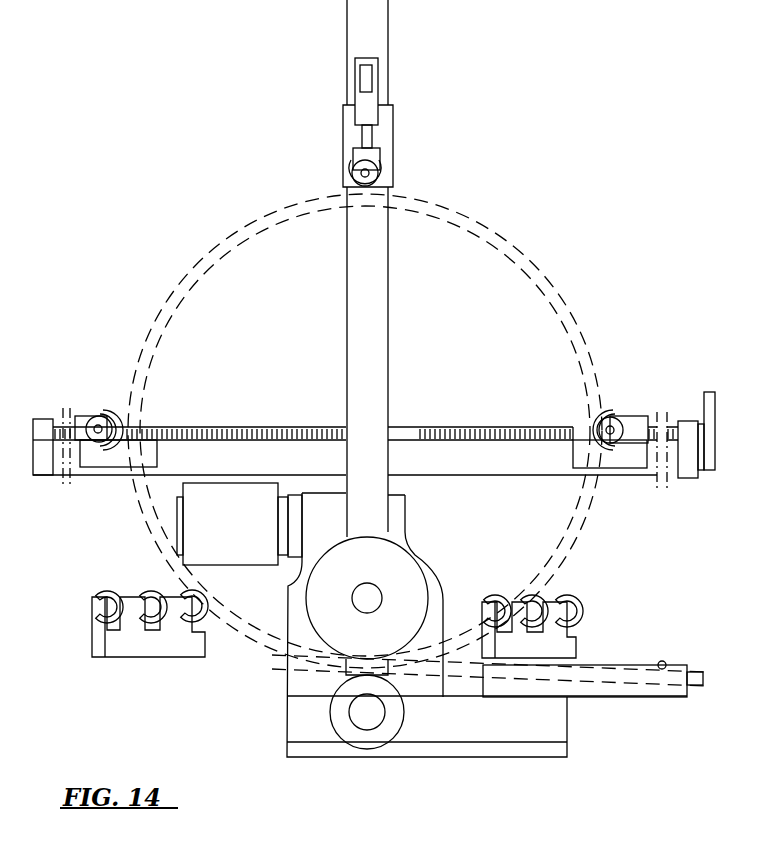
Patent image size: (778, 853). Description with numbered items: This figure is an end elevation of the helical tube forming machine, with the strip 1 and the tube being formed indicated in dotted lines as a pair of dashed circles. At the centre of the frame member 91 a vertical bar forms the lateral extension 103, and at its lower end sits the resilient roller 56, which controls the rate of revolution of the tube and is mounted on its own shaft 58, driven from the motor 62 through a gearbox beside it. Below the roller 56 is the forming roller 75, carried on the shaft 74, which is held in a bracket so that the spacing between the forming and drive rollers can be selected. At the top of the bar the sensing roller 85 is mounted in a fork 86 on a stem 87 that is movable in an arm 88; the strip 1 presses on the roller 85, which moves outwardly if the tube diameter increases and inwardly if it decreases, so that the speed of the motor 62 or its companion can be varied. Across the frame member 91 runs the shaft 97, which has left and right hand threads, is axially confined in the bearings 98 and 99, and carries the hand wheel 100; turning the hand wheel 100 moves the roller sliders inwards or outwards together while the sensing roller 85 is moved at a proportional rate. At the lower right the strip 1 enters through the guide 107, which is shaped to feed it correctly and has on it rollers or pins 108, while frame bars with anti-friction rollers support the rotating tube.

The strip 1 is at (475, 214).
The roller 56 is at (349, 581).
The shaft 58 is at (360, 598).
The motor 62 is at (213, 536).
The shaft 74 is at (361, 716).
The forming roller 75 is at (381, 735).
The sensing roller 85 is at (387, 168).
The fork 86 is at (358, 157).
The stem 87 is at (367, 137).
The arm 88 is at (367, 105).
The frame member 91 is at (447, 463).
The shaft 97 is at (457, 428).
The bearing 98 is at (45, 425).
The bearing 99 is at (690, 433).
The hand wheel 100 is at (708, 392).
The lateral extension 103 is at (375, 330).
The guide 107 is at (628, 688).
The rollers or pins 108 is at (660, 661).